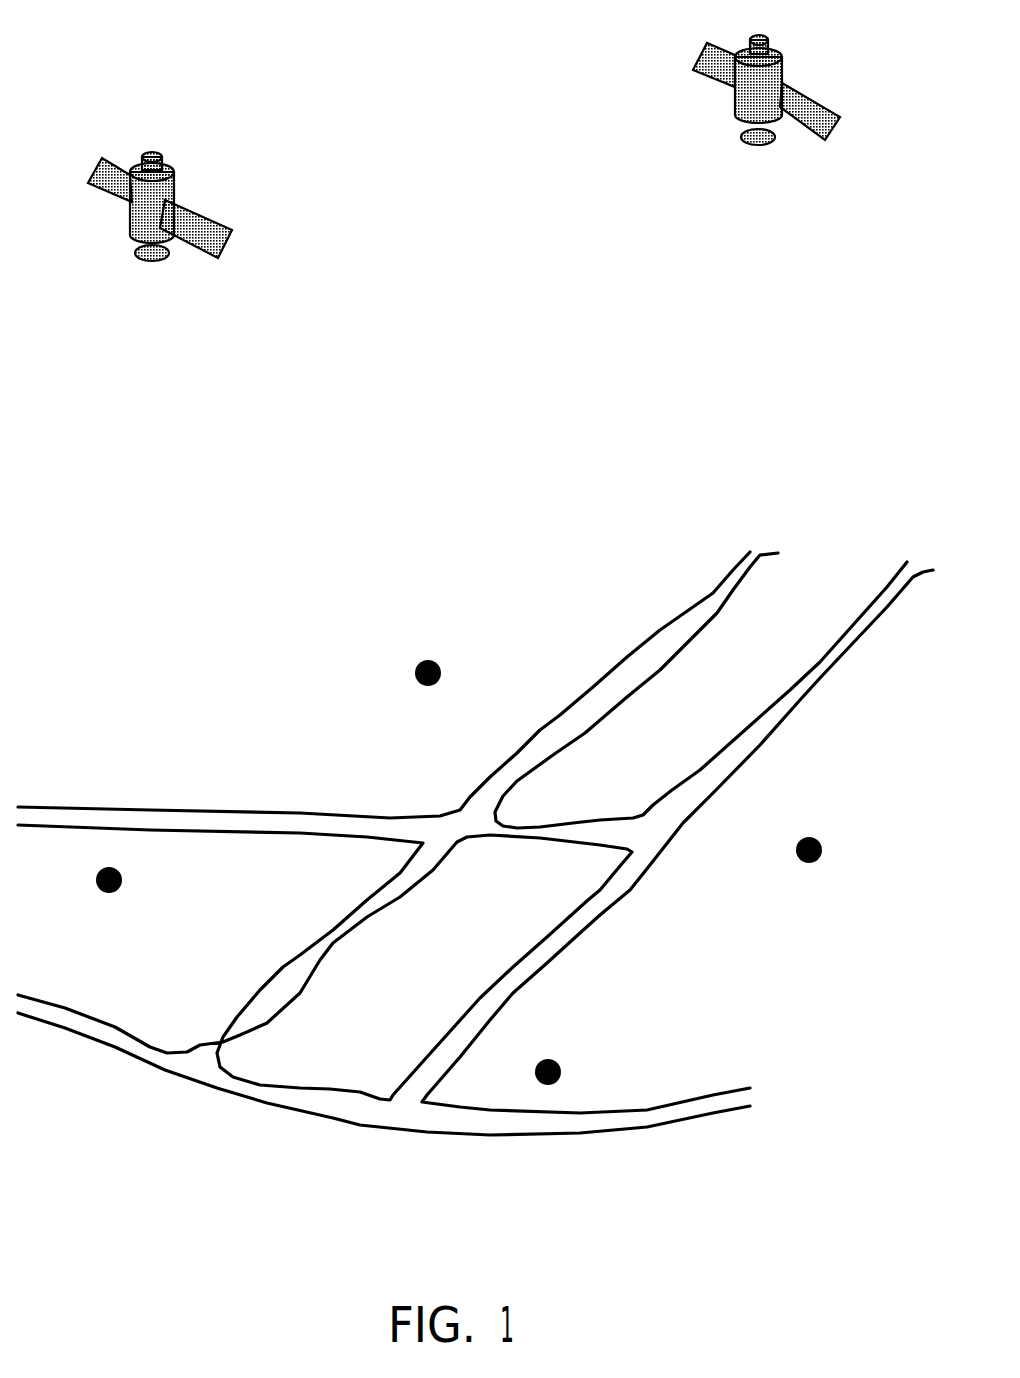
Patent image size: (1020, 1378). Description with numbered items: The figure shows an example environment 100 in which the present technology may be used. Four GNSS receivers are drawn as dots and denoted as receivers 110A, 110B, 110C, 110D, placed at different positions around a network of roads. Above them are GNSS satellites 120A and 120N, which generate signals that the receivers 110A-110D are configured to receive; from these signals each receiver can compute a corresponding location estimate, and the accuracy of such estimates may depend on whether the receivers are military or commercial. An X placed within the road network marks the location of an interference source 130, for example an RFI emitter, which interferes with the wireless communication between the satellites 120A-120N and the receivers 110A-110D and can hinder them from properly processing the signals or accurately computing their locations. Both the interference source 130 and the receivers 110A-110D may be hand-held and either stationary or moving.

The environment 100 is at (130, 63).
The GNSS receiver 110A is at (440, 663).
The GNSS receiver 110B is at (822, 841).
The GNSS receiver 110C is at (561, 1063).
The GNSS receiver 110D is at (122, 873).
The satellite 120A is at (175, 193).
The satellite 120N is at (783, 85).
The interference source 130 is at (558, 805).